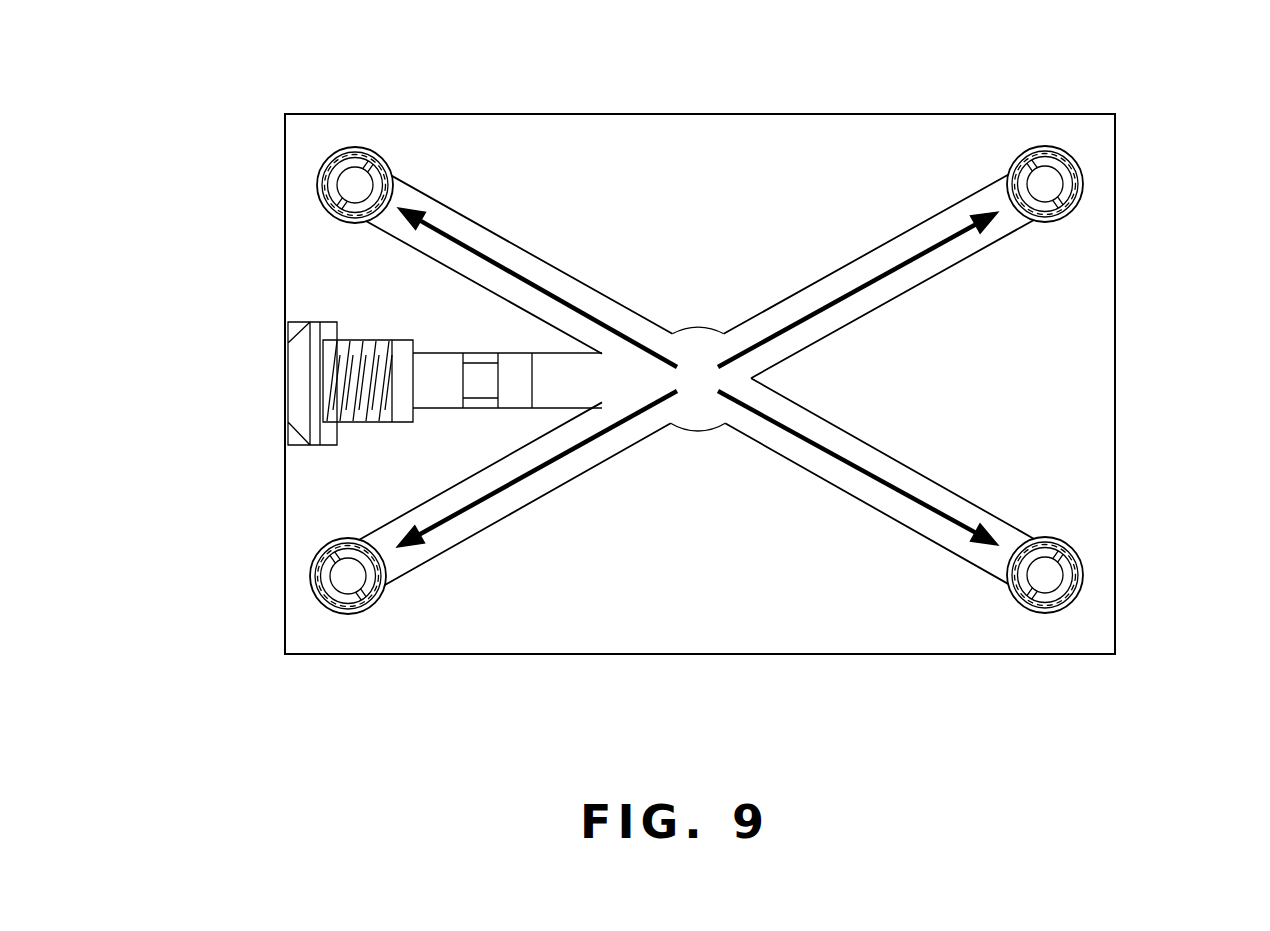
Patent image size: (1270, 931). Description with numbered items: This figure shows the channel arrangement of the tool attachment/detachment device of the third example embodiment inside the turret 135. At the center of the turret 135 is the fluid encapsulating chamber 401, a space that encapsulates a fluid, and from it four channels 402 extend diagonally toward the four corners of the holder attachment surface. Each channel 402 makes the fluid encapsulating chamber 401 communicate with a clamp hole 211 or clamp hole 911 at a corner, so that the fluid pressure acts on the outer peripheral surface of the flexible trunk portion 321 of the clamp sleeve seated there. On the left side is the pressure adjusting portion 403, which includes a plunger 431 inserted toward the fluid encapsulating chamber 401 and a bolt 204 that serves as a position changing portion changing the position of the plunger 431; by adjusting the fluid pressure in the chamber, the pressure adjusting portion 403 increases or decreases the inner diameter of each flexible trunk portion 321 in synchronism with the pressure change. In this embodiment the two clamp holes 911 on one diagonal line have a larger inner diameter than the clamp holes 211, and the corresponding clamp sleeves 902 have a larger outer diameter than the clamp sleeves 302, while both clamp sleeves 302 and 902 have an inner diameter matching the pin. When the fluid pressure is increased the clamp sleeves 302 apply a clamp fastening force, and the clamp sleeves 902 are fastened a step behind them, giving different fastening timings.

The turret 135 is at (867, 654).
The fluid encapsulating chamber 401 is at (705, 428).
The channel 402 is at (506, 247).
The pressure adjusting portion 403 is at (445, 353).
The bolt 204 is at (366, 347).
The plunger 431 is at (507, 355).
The clamp sleeve 902 is at (334, 157).
The clamp sleeve 302 is at (1080, 187).
The flexible trunk portion 321 is at (393, 170).
The clamp hole 911 is at (318, 193).
The clamp hole 211 is at (1067, 223).